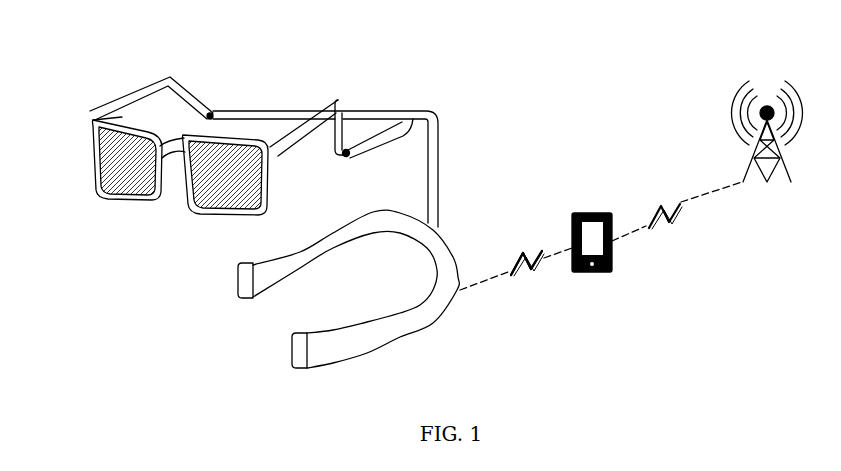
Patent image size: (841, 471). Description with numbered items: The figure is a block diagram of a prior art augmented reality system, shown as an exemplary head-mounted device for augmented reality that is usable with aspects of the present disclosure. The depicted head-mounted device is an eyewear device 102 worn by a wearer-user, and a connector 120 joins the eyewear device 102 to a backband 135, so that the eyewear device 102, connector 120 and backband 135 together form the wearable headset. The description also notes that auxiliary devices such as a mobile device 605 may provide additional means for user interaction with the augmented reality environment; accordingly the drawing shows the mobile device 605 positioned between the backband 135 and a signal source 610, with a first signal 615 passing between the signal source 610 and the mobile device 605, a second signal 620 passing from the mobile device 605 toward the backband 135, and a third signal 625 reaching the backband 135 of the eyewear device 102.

The eyewear device 102 is at (80, 125).
The connector 120 is at (440, 133).
The backband 135 is at (288, 370).
The mobile device 605 is at (588, 273).
The signal source 610 is at (768, 170).
The first signal 615 is at (658, 197).
The second signal 620 is at (517, 277).
The third signal 625 is at (440, 203).